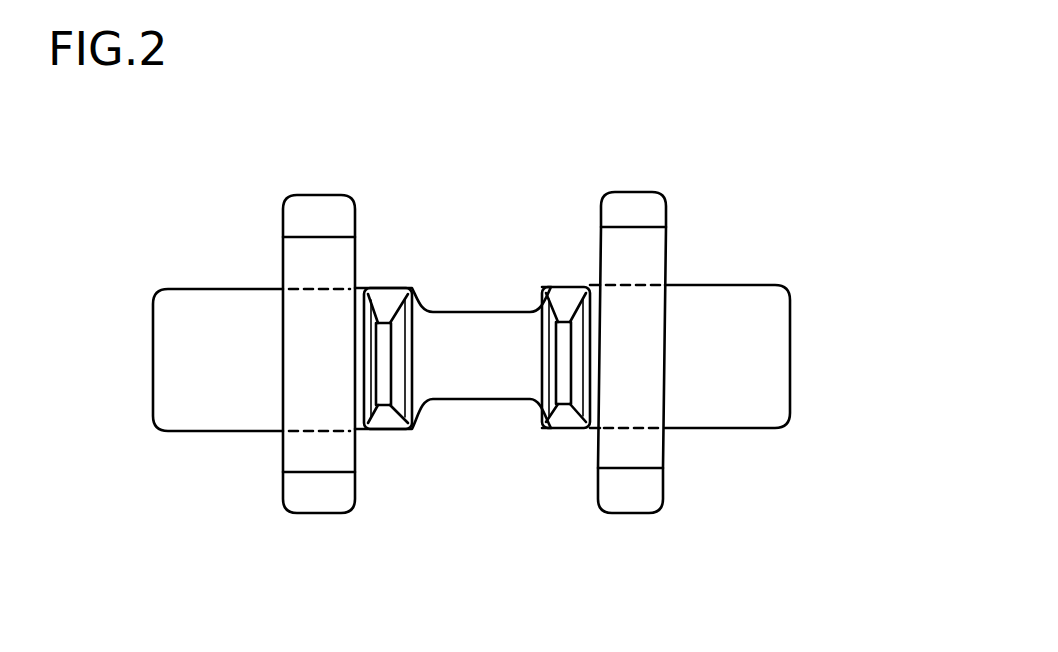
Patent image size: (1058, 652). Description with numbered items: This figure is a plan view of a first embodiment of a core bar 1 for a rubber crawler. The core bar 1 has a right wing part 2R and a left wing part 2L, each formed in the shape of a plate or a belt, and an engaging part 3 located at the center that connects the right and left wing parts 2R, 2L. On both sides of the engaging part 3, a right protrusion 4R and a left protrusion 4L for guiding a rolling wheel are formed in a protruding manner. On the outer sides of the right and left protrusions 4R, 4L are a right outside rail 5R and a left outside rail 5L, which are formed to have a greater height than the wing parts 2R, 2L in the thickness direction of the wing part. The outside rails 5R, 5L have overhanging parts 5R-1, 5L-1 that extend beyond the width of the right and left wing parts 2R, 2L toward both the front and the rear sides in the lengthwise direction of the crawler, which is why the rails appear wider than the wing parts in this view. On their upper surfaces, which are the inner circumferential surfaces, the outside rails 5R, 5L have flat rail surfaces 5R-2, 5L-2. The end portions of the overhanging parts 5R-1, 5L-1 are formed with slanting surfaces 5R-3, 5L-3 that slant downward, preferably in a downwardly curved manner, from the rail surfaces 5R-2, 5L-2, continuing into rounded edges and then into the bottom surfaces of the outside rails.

The core bar 1 is at (745, 164).
The left wing part 2L is at (212, 420).
The right wing part 2R is at (748, 410).
The engaging part 3 is at (475, 387).
The left protrusion 4L is at (392, 300).
The right protrusion 4R is at (560, 292).
The left outside rail 5L is at (244, 380).
The left overhanging part 5L-1 is at (285, 232).
The left rail surface 5L-2 is at (298, 355).
The left slanting surface 5L-3 is at (328, 210).
The right outside rail 5R is at (716, 377).
The right overhanging part 5R-1 is at (667, 237).
The right rail surface 5R-2 is at (645, 347).
The right slanting surface 5R-3 is at (634, 205).